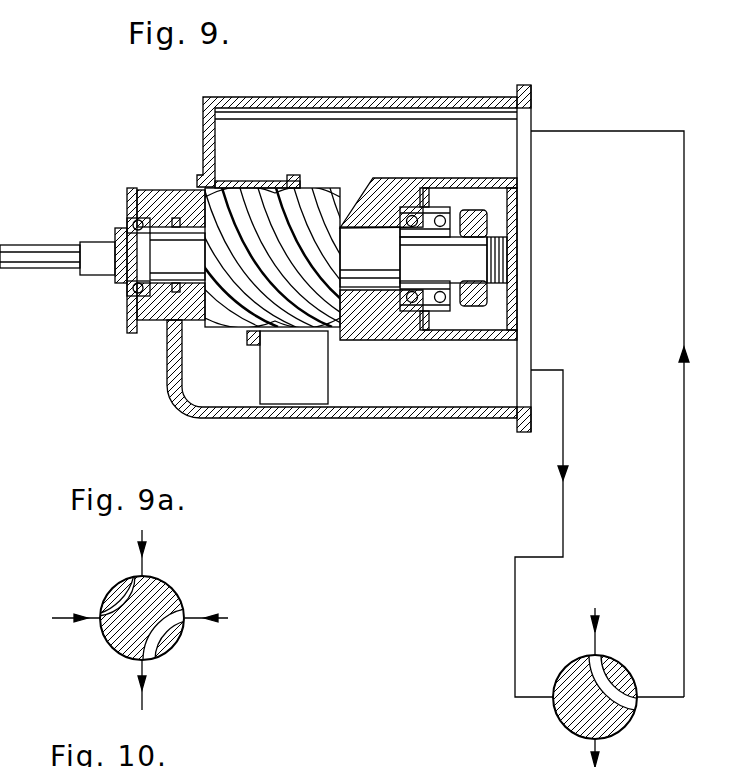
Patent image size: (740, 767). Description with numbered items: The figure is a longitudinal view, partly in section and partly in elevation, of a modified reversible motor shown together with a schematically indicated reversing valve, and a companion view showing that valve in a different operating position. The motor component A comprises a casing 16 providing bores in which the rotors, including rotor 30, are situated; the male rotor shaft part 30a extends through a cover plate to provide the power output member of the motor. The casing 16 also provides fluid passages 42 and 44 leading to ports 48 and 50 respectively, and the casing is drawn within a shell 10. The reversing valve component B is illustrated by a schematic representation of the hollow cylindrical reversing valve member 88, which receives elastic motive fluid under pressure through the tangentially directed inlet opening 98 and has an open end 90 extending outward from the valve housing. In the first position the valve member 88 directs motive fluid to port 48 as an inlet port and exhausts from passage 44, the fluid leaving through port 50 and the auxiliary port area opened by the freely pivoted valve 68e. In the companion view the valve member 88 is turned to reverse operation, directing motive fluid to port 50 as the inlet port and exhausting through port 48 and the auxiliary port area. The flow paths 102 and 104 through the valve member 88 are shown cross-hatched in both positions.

In FIG. 9, the casing 16 is at (349, 266).
In FIG. 9, the fluid passage 42 is at (437, 147).
In FIG. 9, the fluid passage 44 is at (425, 386).
In FIG. 9, the rotor 30 is at (247, 193).
In FIG. 9, the male rotor shaft part 30a is at (30, 247).
In FIG. 9, the port 48 is at (337, 187).
In FIG. 9, the port 50 is at (232, 328).
In FIG. 9, the valve 68e is at (298, 373).
In FIG. 9, the shell 10 is at (243, 78).
In FIG. 9, the motor component A is at (388, 97).
In FIG. 9, the reversing valve component B is at (596, 684).
In FIG. 9, the reversing valve member 88 is at (596, 704).
In FIG. 9A, the reversing valve member 88 is at (142, 622).
In FIG. 9, the inlet opening 98 is at (597, 624).
In FIG. 9, the open end 90 is at (600, 762).
In FIG. 9, the ball valve passage 102 is at (632, 683).
In FIG. 9A, the ball valve passage 102 is at (105, 590).
In FIG. 9, the ball valve passage 104 is at (583, 717).
In FIG. 9A, the ball valve passage 104 is at (155, 635).